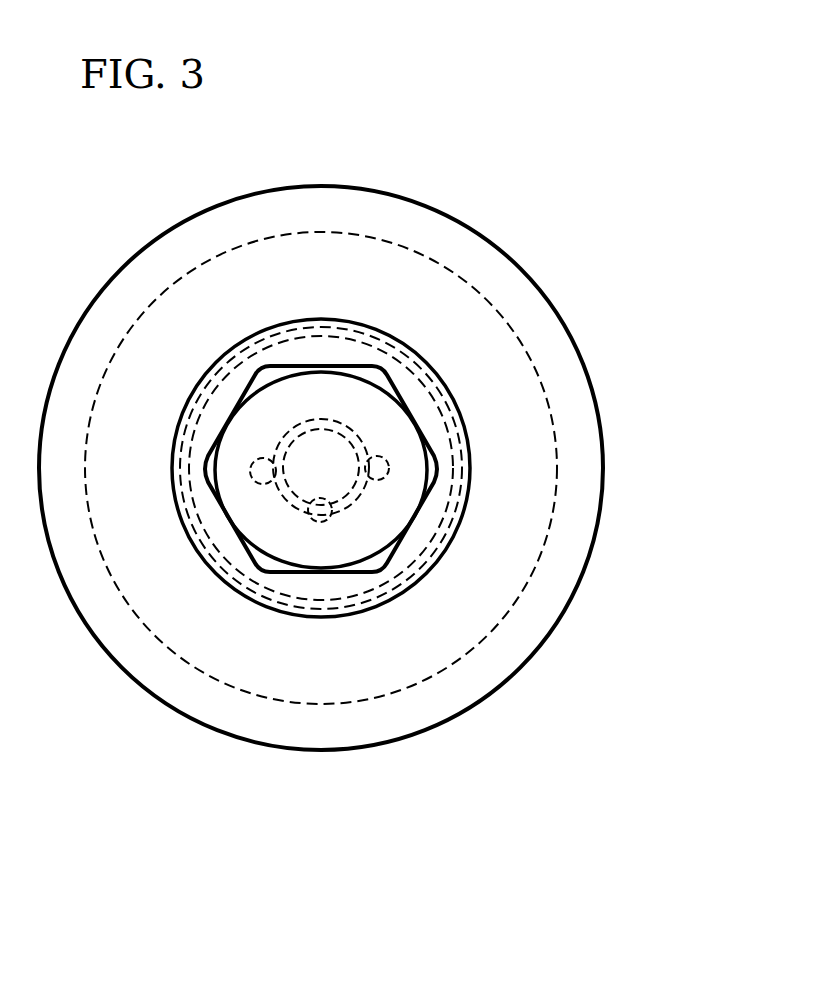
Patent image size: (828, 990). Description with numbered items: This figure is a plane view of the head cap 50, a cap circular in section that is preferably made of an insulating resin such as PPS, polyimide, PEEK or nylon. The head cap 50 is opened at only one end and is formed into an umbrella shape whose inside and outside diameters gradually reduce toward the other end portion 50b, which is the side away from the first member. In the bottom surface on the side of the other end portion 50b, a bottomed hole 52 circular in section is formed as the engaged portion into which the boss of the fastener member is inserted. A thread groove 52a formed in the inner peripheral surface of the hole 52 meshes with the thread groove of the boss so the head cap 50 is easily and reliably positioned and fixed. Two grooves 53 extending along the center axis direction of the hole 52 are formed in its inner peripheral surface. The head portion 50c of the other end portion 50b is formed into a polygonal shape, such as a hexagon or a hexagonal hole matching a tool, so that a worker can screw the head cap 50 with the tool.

The head cap 50 is at (561, 292).
The other end portion 50b is at (390, 508).
The head portion 50c is at (392, 543).
The bottomed hole 52 is at (311, 520).
The thread groove 52a is at (331, 520).
The groove 53 is at (272, 452).